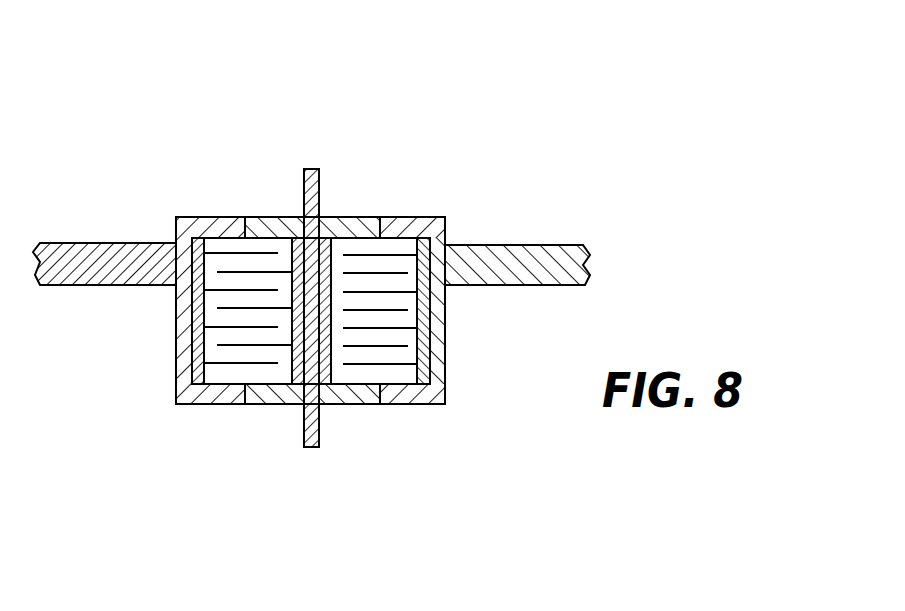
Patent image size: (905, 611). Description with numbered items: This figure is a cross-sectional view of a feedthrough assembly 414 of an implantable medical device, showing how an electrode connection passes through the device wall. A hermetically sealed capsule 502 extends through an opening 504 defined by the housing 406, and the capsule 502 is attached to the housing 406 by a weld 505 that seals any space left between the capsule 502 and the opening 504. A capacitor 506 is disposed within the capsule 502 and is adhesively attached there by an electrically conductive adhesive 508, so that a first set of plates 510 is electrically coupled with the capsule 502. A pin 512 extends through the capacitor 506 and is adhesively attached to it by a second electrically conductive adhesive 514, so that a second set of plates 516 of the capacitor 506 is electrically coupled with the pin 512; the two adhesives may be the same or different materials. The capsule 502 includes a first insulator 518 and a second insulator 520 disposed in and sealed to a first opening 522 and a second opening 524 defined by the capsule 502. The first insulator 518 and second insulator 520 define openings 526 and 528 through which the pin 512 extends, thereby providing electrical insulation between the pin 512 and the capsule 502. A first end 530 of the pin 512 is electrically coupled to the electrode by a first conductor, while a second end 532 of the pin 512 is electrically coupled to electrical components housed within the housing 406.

The housing 406 is at (530, 245).
The sensor assembly 414 is at (253, 135).
The hermetically sealed capsule 502 is at (430, 218).
The opening 504 is at (432, 284).
The weld 505 is at (447, 241).
The capacitor 506 is at (408, 370).
The electrically conductive adhesive 508 is at (432, 342).
The first set of plates 510 is at (379, 357).
The pin 512 is at (319, 187).
The electrically conductive adhesive 514 is at (289, 278).
The second set of plates 516 is at (277, 353).
The first insulator 518 is at (344, 222).
The second insulator 520 is at (277, 405).
The first opening 522 is at (377, 218).
The second opening 524 is at (258, 405).
The opening 526 is at (291, 217).
The opening 528 is at (341, 405).
The first end of pin 530 is at (306, 168).
The second end of pin 532 is at (312, 447).